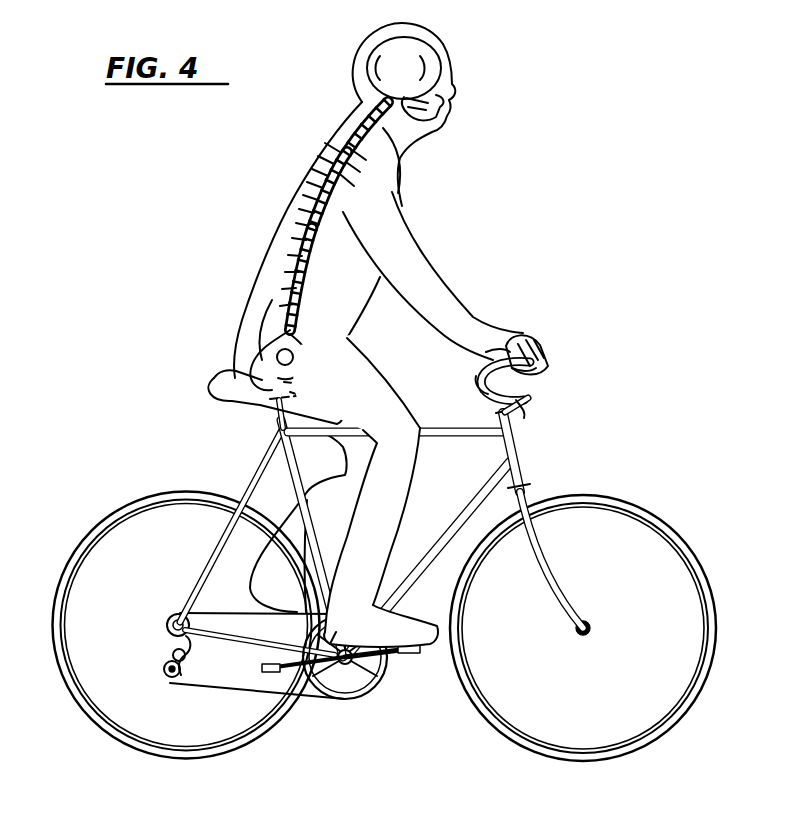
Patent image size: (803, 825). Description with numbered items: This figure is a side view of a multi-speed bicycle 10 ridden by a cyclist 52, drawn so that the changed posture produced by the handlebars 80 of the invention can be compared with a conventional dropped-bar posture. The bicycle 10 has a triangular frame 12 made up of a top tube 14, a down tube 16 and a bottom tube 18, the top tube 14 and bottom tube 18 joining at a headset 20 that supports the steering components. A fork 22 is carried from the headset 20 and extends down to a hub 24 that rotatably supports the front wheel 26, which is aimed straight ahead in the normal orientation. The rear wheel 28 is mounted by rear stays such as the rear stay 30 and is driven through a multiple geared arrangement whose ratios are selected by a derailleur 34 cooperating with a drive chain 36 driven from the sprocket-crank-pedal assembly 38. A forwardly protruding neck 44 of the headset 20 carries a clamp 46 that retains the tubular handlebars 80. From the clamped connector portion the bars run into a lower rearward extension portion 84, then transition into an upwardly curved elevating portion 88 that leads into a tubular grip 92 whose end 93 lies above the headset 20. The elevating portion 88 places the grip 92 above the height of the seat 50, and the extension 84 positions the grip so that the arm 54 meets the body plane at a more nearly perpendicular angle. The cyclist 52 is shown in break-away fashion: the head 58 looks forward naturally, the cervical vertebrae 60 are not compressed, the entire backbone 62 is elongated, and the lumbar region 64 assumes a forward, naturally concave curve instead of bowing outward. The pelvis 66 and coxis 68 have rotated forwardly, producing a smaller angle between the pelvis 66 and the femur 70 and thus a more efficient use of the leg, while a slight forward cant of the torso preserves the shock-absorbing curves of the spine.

The bicycle 10 is at (636, 343).
The frame 12 is at (452, 503).
The top tube 14 is at (455, 436).
The down tube 16 is at (293, 494).
The bottom tube 18 is at (440, 532).
The headset 20 is at (527, 462).
The fork 22 is at (548, 560).
The hub 24 is at (594, 626).
The front wheel 26 is at (658, 512).
The rear wheel 28 is at (90, 532).
The rear stay 30 is at (258, 478).
The derailleur 34 is at (163, 667).
The drive chain 36 is at (318, 692).
The sprocket-crank-pedal assembly 38 is at (392, 684).
The neck 44 is at (530, 380).
The clamp 46 is at (535, 400).
The seat 50 is at (226, 398).
The cyclist 52 is at (356, 42).
The arm 54 is at (436, 270).
The head 58 is at (442, 54).
The cervical vertebrae 60 is at (362, 126).
The backbone 62 is at (284, 209).
The lumbar region 64 is at (284, 262).
The pelvis 66 is at (258, 372).
The coxis 68 is at (254, 332).
The femur 70 is at (338, 328).
The handlebars 80 is at (598, 346).
The right-hand lower rearward extension portion 84 is at (522, 404).
The right elevating portion 88 is at (478, 385).
The right tubular grip 92 is at (490, 359).
The grip end 93 is at (514, 340).